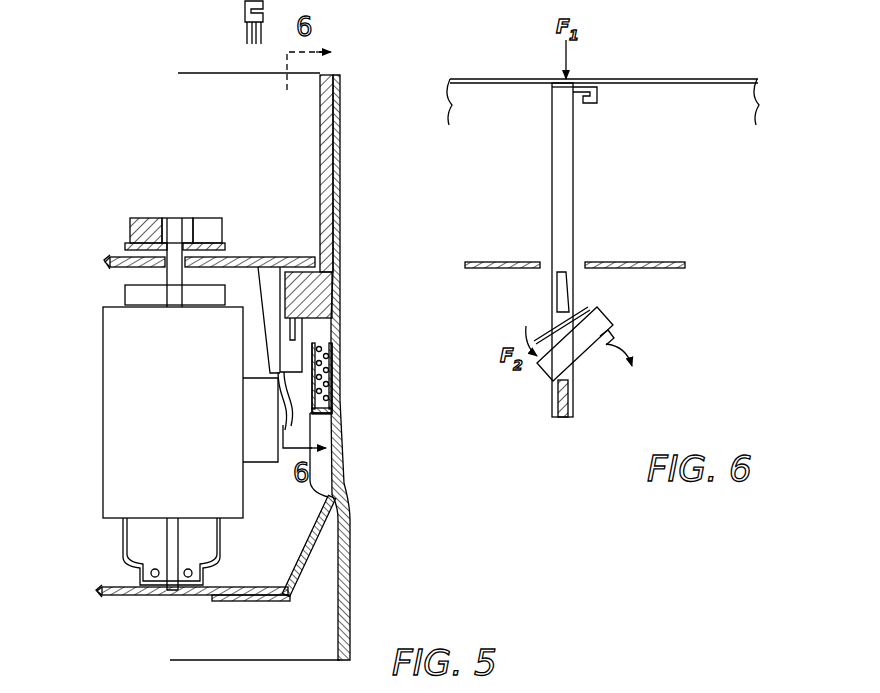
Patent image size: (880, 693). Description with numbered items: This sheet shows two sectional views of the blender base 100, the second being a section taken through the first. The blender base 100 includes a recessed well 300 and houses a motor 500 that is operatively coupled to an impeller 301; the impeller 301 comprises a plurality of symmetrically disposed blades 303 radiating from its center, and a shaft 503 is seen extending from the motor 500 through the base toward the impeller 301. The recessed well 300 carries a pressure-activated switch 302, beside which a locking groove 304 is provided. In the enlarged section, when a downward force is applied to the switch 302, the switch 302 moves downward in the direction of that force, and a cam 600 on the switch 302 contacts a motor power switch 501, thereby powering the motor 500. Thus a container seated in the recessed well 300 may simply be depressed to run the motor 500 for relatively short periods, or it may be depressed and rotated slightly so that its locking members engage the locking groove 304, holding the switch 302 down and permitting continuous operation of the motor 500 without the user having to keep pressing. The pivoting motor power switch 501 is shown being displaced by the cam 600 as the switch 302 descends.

In FIG. 5, the blender base 100 is at (341, 256).
In FIG. 5, the recessed well 300 is at (264, 366).
In FIG. 5, the impeller 301 is at (186, 212).
In FIG. 5, the pressure-activated switch 302 is at (321, 137).
In FIG. 6, the pressure-activated switch 302 is at (562, 170).
In FIG. 5, the blades 303 is at (140, 217).
In FIG. 6, the locking groove 304 is at (586, 99).
In FIG. 5, the motor 500 is at (128, 360).
In FIG. 5, the motor power switch 501 is at (288, 354).
In FIG. 6, the motor power switch 501 is at (574, 348).
In FIG. 5, the shaft 503 is at (176, 272).
In FIG. 6, the cam 600 is at (560, 291).